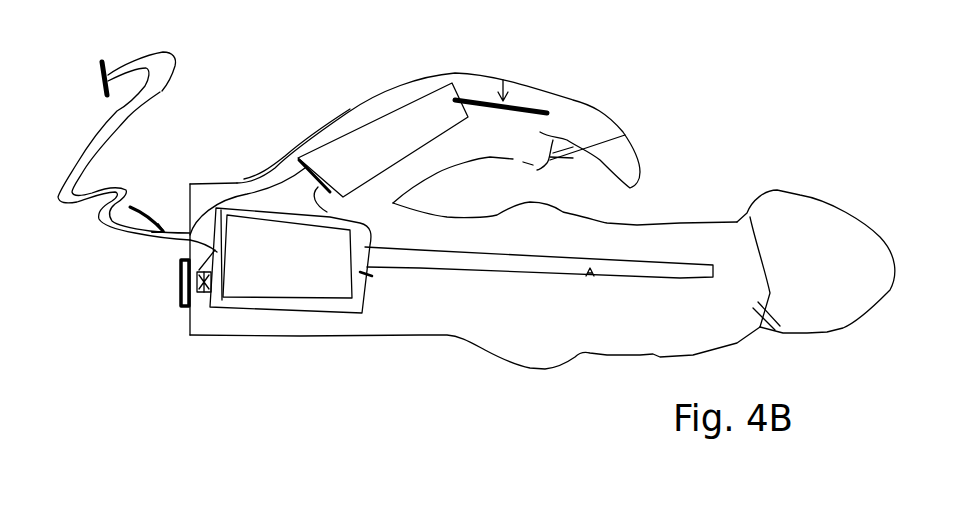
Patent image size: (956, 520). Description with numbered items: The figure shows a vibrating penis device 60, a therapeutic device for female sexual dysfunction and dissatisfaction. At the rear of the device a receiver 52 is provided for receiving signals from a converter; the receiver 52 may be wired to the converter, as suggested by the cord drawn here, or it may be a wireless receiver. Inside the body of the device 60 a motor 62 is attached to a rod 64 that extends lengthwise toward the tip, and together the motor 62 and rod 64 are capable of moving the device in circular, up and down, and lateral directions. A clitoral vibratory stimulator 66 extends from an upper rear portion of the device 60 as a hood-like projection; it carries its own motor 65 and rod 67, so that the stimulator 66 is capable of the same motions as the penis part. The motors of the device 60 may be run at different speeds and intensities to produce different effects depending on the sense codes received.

The receiver 52 is at (180, 283).
The vibrating penis device 60 is at (506, 406).
The motor 62 is at (248, 297).
The rod 64 is at (452, 260).
The motor 65 is at (380, 123).
The clitoral vibratory stimulator 66 is at (509, 70).
The rod 67 is at (482, 98).